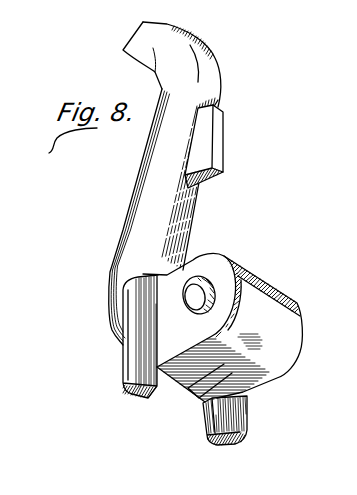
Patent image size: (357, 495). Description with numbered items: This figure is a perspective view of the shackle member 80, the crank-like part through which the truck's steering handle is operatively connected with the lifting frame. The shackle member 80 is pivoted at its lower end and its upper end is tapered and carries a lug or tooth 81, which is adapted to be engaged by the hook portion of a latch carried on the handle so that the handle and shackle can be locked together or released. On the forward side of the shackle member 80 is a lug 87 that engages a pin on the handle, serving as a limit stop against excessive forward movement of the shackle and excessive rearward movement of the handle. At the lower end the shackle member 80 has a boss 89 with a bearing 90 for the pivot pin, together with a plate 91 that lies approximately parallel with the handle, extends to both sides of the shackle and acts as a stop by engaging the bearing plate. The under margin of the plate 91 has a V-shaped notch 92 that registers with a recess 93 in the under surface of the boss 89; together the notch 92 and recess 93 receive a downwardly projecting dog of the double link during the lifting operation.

The shackle member 80 is at (108, 273).
The lug or tooth 81 is at (154, 70).
The lug 87 is at (223, 173).
The boss 89 is at (273, 307).
The bearing 90 is at (203, 278).
The plate 91 is at (142, 403).
The V-shaped notch 92 is at (167, 408).
The recess 93 is at (218, 381).